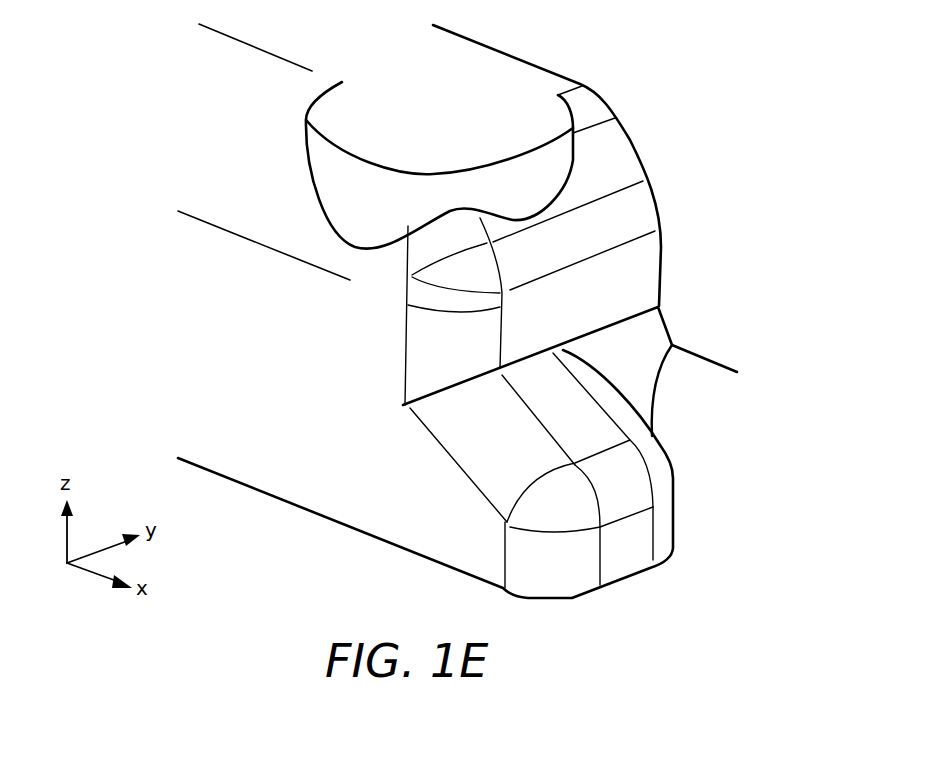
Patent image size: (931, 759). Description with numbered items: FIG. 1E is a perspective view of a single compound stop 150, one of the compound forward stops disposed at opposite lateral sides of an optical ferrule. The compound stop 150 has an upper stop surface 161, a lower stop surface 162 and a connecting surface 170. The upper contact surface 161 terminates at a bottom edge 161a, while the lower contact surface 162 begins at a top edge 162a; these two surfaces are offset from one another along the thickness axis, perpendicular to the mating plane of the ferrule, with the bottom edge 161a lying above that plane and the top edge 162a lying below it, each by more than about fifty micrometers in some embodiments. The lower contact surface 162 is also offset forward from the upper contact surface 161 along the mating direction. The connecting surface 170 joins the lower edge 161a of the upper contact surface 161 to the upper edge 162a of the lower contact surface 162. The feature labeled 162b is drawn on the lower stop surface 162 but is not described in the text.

The compound stop 150 is at (722, 160).
The upper stop surface 161 is at (635, 273).
The bottom edge of the upper contact surface 161a is at (660, 303).
The lower stop surface 162 is at (627, 550).
The top edge of the lower contact surface 162a is at (642, 495).
The band 162b is at (661, 247).
The connecting surface 170 is at (578, 423).